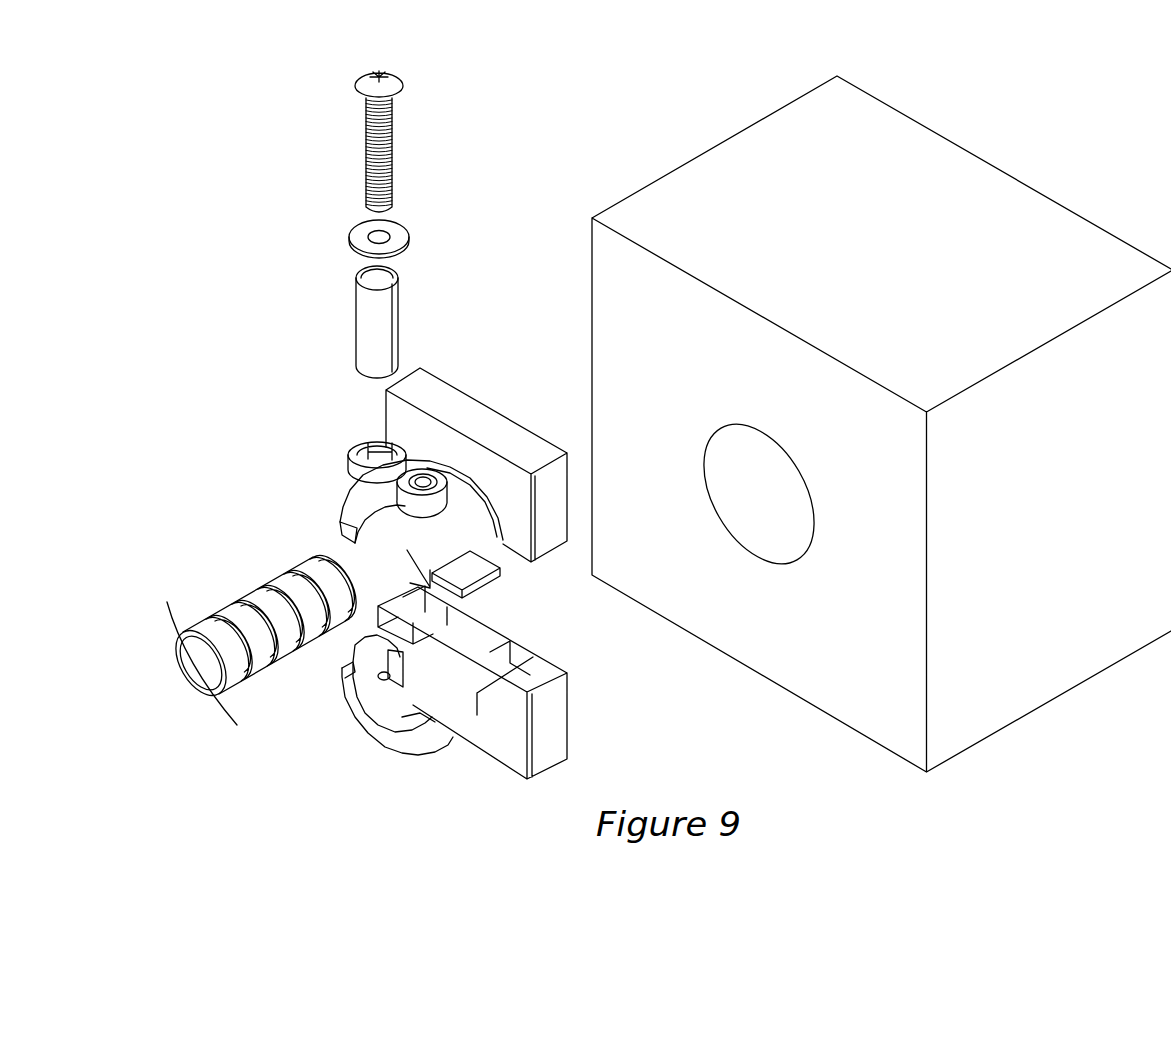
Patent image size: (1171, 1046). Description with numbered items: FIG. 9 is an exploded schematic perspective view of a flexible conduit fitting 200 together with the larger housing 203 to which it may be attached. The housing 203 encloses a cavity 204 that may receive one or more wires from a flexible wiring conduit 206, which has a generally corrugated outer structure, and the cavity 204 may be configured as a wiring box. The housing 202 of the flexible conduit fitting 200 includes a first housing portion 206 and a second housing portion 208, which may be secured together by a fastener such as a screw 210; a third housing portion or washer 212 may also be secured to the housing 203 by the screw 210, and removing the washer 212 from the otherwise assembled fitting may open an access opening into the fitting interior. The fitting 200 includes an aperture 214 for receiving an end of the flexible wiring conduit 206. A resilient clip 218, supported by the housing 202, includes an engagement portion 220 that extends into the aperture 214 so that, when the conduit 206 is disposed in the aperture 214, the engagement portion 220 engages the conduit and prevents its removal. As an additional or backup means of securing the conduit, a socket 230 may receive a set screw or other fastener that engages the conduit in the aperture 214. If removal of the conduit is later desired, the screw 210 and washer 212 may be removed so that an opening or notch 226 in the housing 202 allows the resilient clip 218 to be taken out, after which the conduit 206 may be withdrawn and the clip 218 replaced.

The flexible conduit fitting 200 is at (490, 388).
The housing 202 is at (543, 547).
The housing 203 is at (1052, 663).
The cavity 204 is at (788, 550).
The flexible wiring conduit 206 is at (507, 433).
The second housing portion 208 is at (560, 742).
The screw 210 is at (366, 148).
The washer 212 is at (403, 233).
The aperture 214 is at (383, 710).
The resilient clip 218 is at (360, 320).
The engagement portion 220 is at (398, 330).
The notch 226 is at (360, 452).
The socket 230 is at (420, 483).